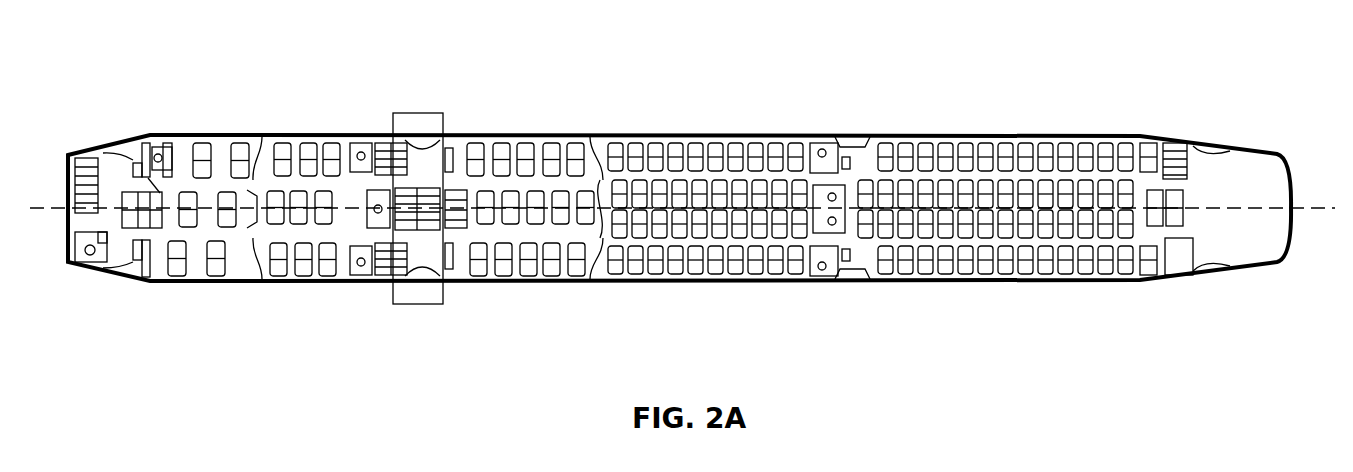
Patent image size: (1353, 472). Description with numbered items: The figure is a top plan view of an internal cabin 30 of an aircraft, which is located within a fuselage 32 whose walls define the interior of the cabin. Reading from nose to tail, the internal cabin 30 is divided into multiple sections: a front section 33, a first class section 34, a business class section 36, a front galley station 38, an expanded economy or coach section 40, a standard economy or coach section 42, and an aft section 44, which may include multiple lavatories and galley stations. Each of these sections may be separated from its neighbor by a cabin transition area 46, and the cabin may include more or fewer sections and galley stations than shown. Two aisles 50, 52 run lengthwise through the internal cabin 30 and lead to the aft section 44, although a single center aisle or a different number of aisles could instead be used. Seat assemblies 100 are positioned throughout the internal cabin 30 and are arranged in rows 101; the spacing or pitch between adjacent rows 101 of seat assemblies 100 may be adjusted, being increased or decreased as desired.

The internal cabin 30 is at (207, 40).
The fuselage 32 is at (541, 94).
The front section 33 is at (126, 298).
The first class section 34 is at (222, 282).
The business class section 36 is at (297, 135).
The front galley station 38 is at (418, 300).
The expanded economy or coach section 40 is at (518, 280).
The standard economy or coach section 42 is at (648, 135).
The aft section 44 is at (1213, 165).
The cabin transition area 46 is at (145, 137).
The aisle 50 is at (1008, 178).
The aisle 52 is at (1027, 243).
The seat assembly 100 is at (775, 145).
The row 101 is at (767, 127).